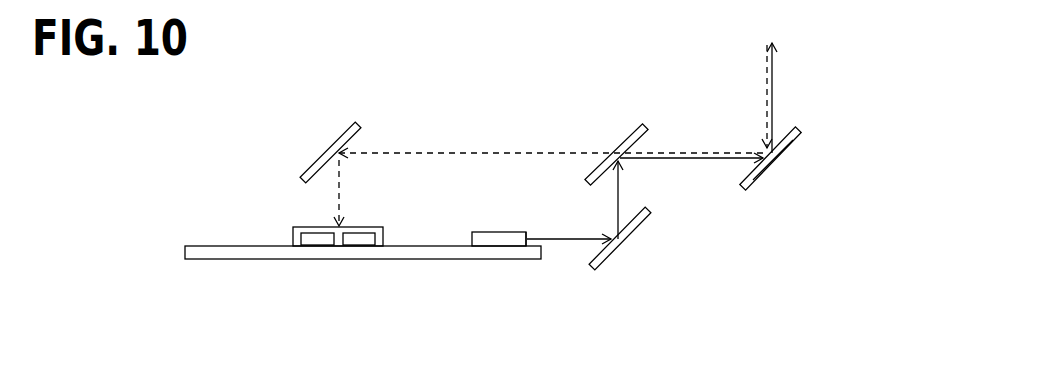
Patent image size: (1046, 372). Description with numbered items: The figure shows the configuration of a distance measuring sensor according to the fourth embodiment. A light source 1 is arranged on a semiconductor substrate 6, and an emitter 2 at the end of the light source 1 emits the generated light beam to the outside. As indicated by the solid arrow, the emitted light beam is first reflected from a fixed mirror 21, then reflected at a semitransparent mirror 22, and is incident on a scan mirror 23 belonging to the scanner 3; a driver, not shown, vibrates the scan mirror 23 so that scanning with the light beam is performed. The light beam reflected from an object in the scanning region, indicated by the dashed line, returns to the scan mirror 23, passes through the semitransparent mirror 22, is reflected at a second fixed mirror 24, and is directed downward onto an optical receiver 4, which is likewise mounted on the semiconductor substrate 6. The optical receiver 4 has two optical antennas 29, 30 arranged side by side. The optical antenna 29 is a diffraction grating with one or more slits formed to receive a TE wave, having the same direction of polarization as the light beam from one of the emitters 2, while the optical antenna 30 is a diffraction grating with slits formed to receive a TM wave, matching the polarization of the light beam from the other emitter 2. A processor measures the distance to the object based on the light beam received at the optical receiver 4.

The light source 1 is at (486, 238).
The emitter 2 is at (525, 238).
The scanner 3 is at (783, 164).
The optical receiver 4 is at (295, 228).
The semiconductor substrate 6 is at (198, 246).
The fixed mirror 21 is at (640, 228).
The semitransparent mirror 22 is at (625, 143).
The scan mirror 23 is at (799, 134).
The fixed mirror 24 is at (332, 142).
The optical antenna 29 is at (320, 240).
The optical antenna 30 is at (365, 240).